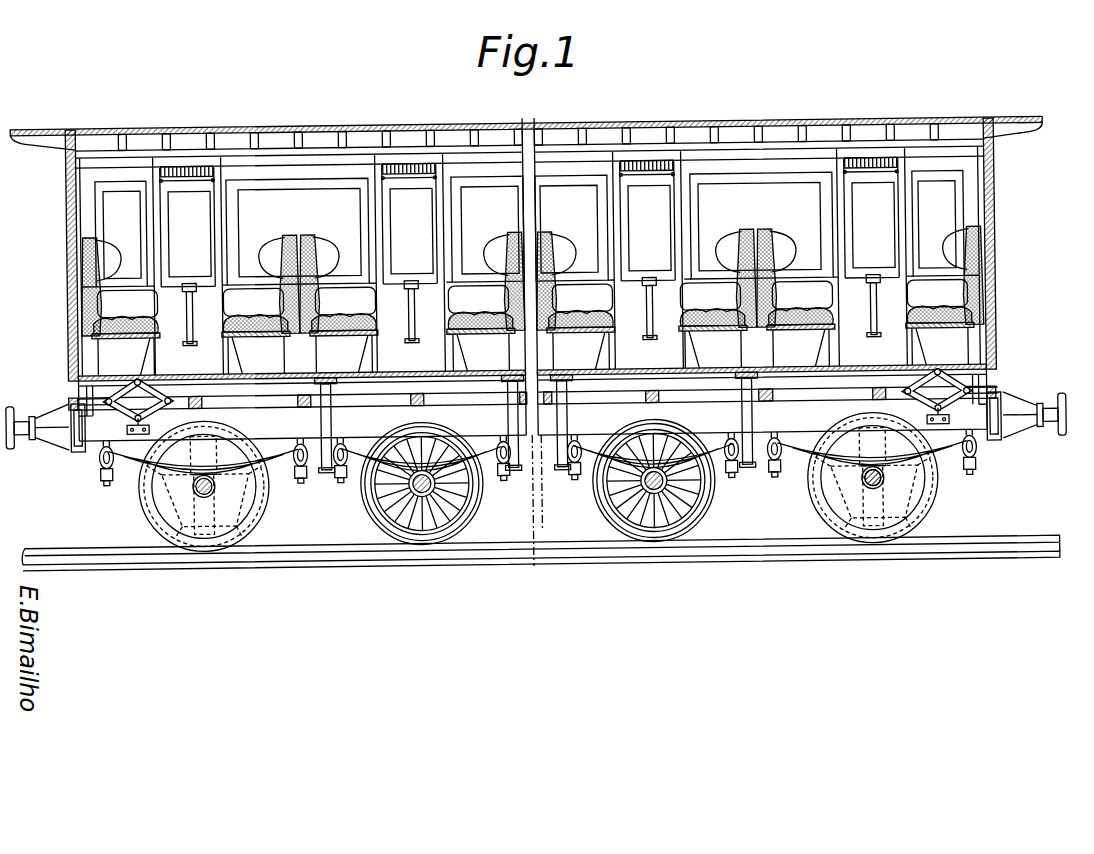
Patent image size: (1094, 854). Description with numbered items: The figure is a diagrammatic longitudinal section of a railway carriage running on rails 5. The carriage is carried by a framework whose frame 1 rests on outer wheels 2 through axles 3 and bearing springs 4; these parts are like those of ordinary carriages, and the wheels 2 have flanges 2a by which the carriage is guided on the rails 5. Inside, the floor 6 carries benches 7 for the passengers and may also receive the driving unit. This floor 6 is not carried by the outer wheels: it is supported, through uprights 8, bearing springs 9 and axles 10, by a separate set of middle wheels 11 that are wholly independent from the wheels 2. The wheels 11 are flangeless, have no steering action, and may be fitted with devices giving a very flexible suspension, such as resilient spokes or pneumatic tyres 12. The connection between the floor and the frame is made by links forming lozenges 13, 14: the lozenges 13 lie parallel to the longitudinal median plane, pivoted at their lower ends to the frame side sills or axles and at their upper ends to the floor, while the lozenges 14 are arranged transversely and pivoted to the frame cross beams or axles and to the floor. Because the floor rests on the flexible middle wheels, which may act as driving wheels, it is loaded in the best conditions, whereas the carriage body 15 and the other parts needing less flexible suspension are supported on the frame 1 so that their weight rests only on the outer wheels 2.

The frame 1 is at (800, 437).
The wheels 2 is at (886, 477).
The flanges 2a is at (886, 477).
The axles 3 is at (854, 485).
The bearing springs 4 is at (940, 452).
The rails 5 is at (1022, 544).
The floor 6 is at (674, 370).
The benches 7 is at (582, 312).
The uprights 8 is at (567, 425).
The bearing springs 9 is at (578, 452).
The axles 10 is at (618, 477).
The wheels 11 is at (673, 482).
The pneumatic tyres 12 is at (671, 480).
The lozenges 13 is at (972, 378).
The lozenges 14 is at (996, 398).
The carriage body 15 is at (992, 202).